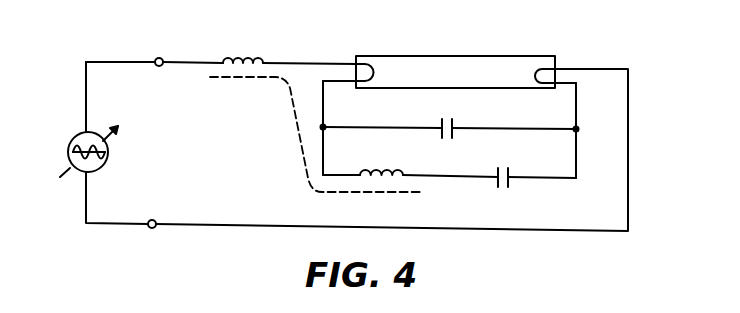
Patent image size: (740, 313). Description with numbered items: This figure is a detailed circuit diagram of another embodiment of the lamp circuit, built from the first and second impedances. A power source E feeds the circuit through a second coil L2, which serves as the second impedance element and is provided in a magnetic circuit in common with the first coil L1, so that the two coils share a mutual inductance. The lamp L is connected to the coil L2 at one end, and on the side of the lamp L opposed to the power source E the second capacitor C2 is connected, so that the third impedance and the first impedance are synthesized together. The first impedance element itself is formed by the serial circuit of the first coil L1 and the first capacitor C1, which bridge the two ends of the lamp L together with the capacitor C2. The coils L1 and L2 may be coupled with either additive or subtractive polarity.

The variable-frequency AC voltage source E is at (82, 151).
The series inductor L2 is at (243, 48).
The fluorescent lamp L is at (475, 60).
The resonant inductor L1 is at (363, 162).
The capacitor C2 is at (449, 122).
The resonant capacitor C1 is at (489, 189).